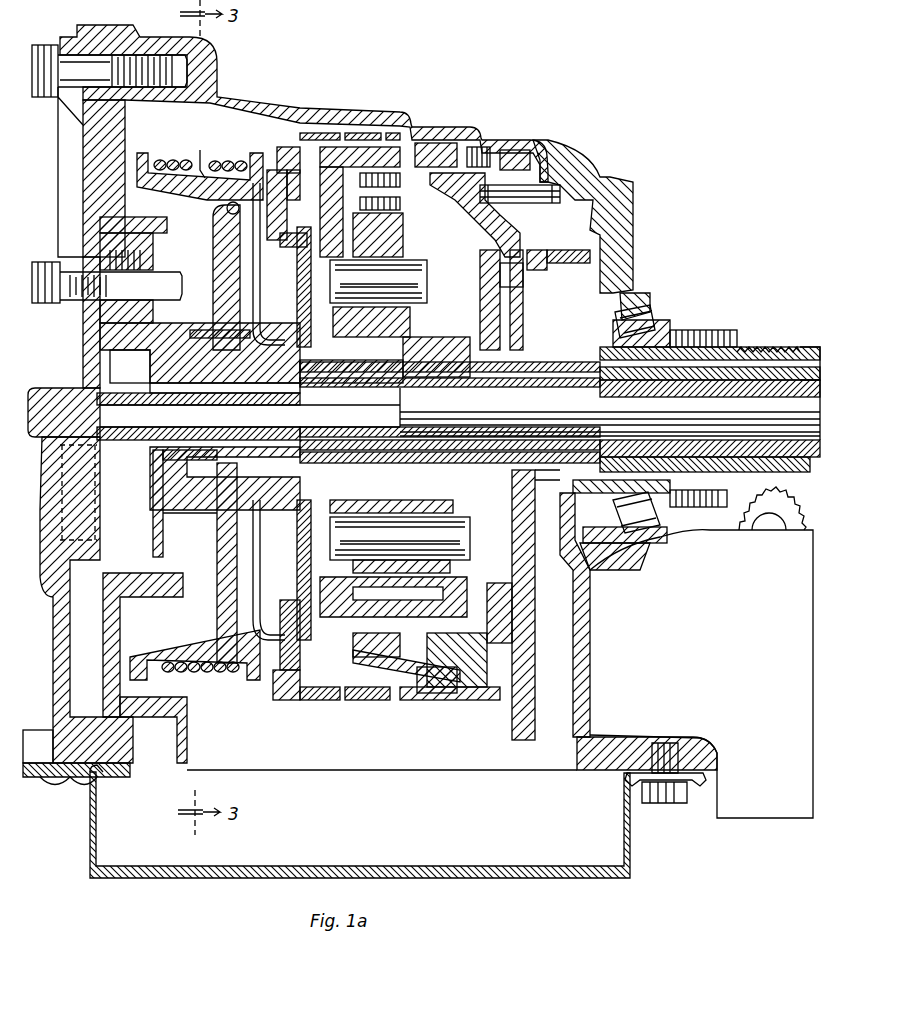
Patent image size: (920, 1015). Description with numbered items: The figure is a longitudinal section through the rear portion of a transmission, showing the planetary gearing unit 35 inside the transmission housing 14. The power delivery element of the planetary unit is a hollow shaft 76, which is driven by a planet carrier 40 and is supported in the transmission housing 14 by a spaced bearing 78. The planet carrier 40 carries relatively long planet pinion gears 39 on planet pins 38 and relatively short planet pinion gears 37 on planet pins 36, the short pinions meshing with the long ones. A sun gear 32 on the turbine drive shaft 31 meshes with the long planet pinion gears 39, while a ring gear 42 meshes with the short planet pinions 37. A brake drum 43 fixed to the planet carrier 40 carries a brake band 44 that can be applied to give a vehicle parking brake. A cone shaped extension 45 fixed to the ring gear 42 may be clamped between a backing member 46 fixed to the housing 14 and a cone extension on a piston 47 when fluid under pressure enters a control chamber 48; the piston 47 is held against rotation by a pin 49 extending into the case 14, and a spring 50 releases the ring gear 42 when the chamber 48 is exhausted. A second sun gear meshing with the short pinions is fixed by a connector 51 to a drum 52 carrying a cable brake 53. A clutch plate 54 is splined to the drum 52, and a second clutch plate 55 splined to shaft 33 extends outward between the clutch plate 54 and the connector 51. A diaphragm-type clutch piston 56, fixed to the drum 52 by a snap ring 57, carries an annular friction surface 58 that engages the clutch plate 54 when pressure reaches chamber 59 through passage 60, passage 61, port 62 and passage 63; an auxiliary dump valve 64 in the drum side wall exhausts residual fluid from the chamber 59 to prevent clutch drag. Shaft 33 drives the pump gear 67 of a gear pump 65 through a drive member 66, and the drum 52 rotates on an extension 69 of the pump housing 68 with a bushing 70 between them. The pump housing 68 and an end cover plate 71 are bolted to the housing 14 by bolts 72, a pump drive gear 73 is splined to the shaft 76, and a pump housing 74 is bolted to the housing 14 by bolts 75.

The transmission housing 14 is at (359, 105).
The turbine drive shaft 31 is at (595, 393).
The sun gear 32 is at (430, 345).
The shaft 33 is at (800, 362).
The planetary gearing unit 35 is at (266, 147).
The planet pins 36 is at (418, 283).
The relatively short planet pinion gears 37 is at (400, 225).
The planet pins 38 is at (335, 580).
The relatively long planet pinion gears 39 is at (462, 580).
The planet carrier 40 is at (430, 616).
The ring gear 42 is at (385, 640).
The brake drum 43 is at (270, 683).
The brake band 44 is at (305, 700).
The cone shaped extension 45 is at (382, 700).
The backing member 46 is at (437, 695).
The piston 47 is at (460, 190).
The control chamber 48 is at (530, 172).
The pin 49 is at (565, 183).
The spring 50 is at (480, 700).
The connector 51 is at (305, 212).
The drum 52 is at (200, 150).
The cable brake 53 is at (165, 160).
The clutch plate 54 is at (301, 239).
The second clutch plate 55 is at (269, 264).
The clutch piston 56 is at (272, 570).
The snap ring 57 is at (296, 300).
The annular friction surface 58 is at (288, 565).
The chamber 59 is at (235, 240).
The passage 60 is at (175, 515).
The passage 61 is at (212, 440).
The port 62 is at (272, 447).
The passage 63 is at (220, 334).
The auxiliary dump valve 64 is at (225, 208).
The gear pump 65 is at (164, 249).
The drive member 66 is at (130, 366).
The pump gear 67 is at (112, 328).
The pump housing 68 is at (125, 148).
The extension 69 is at (255, 390).
The bushing 70 is at (200, 353).
The end cover plate 71 is at (80, 118).
The bolts 72 is at (144, 58).
The pump drive gear 73 is at (530, 500).
The pump housing 74 is at (478, 268).
The bolts 75 is at (560, 300).
The hollow shaft 76 is at (762, 352).
The bearing 78 is at (660, 315).